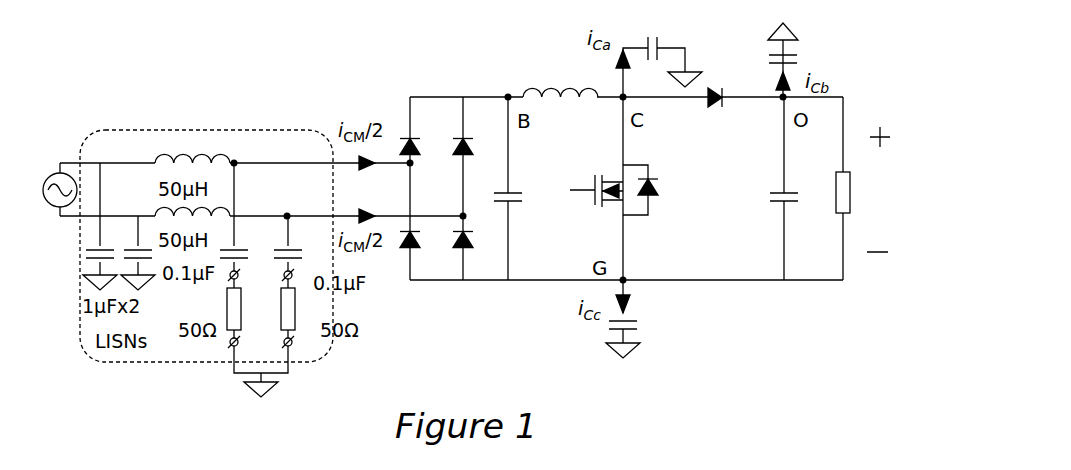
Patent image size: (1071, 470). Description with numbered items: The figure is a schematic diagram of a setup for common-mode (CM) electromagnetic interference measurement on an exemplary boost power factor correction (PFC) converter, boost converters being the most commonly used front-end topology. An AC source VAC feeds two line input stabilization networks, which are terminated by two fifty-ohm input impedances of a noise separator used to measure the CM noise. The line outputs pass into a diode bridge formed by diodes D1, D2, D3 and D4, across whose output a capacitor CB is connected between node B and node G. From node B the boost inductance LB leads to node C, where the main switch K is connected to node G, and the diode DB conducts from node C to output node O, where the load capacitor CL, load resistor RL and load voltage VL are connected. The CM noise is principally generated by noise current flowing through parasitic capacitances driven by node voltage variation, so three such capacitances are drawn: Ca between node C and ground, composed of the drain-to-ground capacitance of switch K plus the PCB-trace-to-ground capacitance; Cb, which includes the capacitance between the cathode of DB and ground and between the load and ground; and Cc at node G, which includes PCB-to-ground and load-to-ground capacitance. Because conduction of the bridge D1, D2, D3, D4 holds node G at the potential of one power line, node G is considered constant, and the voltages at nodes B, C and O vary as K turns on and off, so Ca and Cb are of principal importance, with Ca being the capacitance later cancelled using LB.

The AC input voltage source VAC is at (52, 172).
The diode bridge diode D1 is at (413, 169).
The diode bridge diode D2 is at (467, 169).
The diode bridge diode D3 is at (406, 274).
The diode bridge diode D4 is at (467, 274).
The bridge output capacitor CB is at (522, 188).
The boost inductance LB is at (560, 74).
The main switch K is at (614, 188).
The parasitic capacitance between node C and ground Ca is at (659, 58).
The diode DB is at (720, 118).
The parasitic capacitance at cathode of diode DB Cb is at (798, 60).
The load capacitor CL is at (764, 188).
The load resistor RL is at (829, 188).
The load voltage VL is at (876, 189).
The parasitic capacitance at node G Cc is at (638, 319).